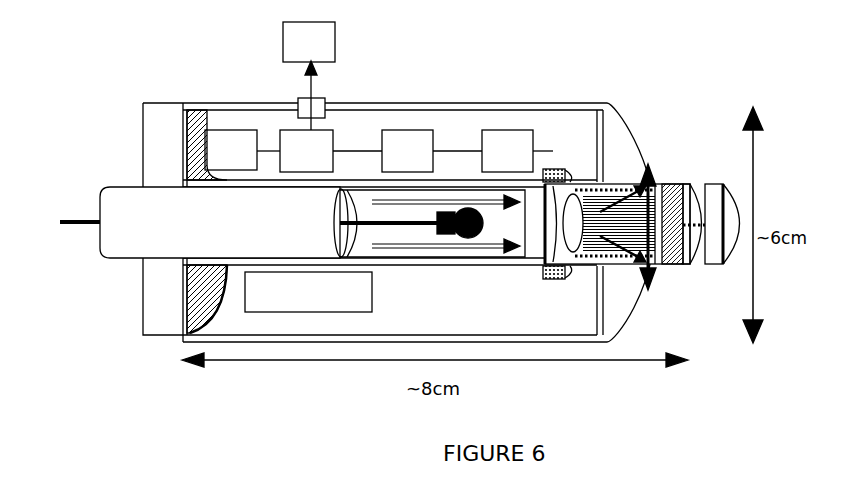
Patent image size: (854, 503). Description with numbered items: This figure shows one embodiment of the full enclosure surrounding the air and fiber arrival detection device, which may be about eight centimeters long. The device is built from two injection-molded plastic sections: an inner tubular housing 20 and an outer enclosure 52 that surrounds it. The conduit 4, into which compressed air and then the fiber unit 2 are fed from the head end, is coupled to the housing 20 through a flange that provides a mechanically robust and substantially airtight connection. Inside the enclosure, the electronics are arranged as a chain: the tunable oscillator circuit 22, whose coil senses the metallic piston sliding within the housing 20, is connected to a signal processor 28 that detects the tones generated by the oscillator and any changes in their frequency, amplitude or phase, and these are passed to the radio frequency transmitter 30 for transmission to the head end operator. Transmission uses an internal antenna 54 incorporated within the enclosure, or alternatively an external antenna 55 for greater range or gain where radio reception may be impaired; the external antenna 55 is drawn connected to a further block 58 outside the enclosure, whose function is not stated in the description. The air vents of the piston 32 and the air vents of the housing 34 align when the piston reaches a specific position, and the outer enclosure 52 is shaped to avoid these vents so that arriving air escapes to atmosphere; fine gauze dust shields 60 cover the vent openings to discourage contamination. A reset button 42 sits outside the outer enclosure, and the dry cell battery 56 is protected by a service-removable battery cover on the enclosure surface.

The fiber unit 2 is at (67, 228).
The conduit 4 is at (122, 263).
The inner tubular housing 20 is at (453, 266).
The tunable oscillator circuit 22 is at (517, 151).
The signal processor 28 is at (432, 151).
The radio frequency transmitter 30 is at (331, 145).
The air vents of the piston 32 is at (657, 183).
The air vents of the housing 34 is at (672, 224).
The reset button 42 is at (740, 206).
The outer enclosure 52 is at (480, 103).
The internal antenna 54 is at (242, 150).
The external antenna 55 is at (325, 101).
The dry cell battery 56 is at (308, 292).
The display unit 58 is at (309, 60).
The fine gauze dust shields 60 is at (634, 196).